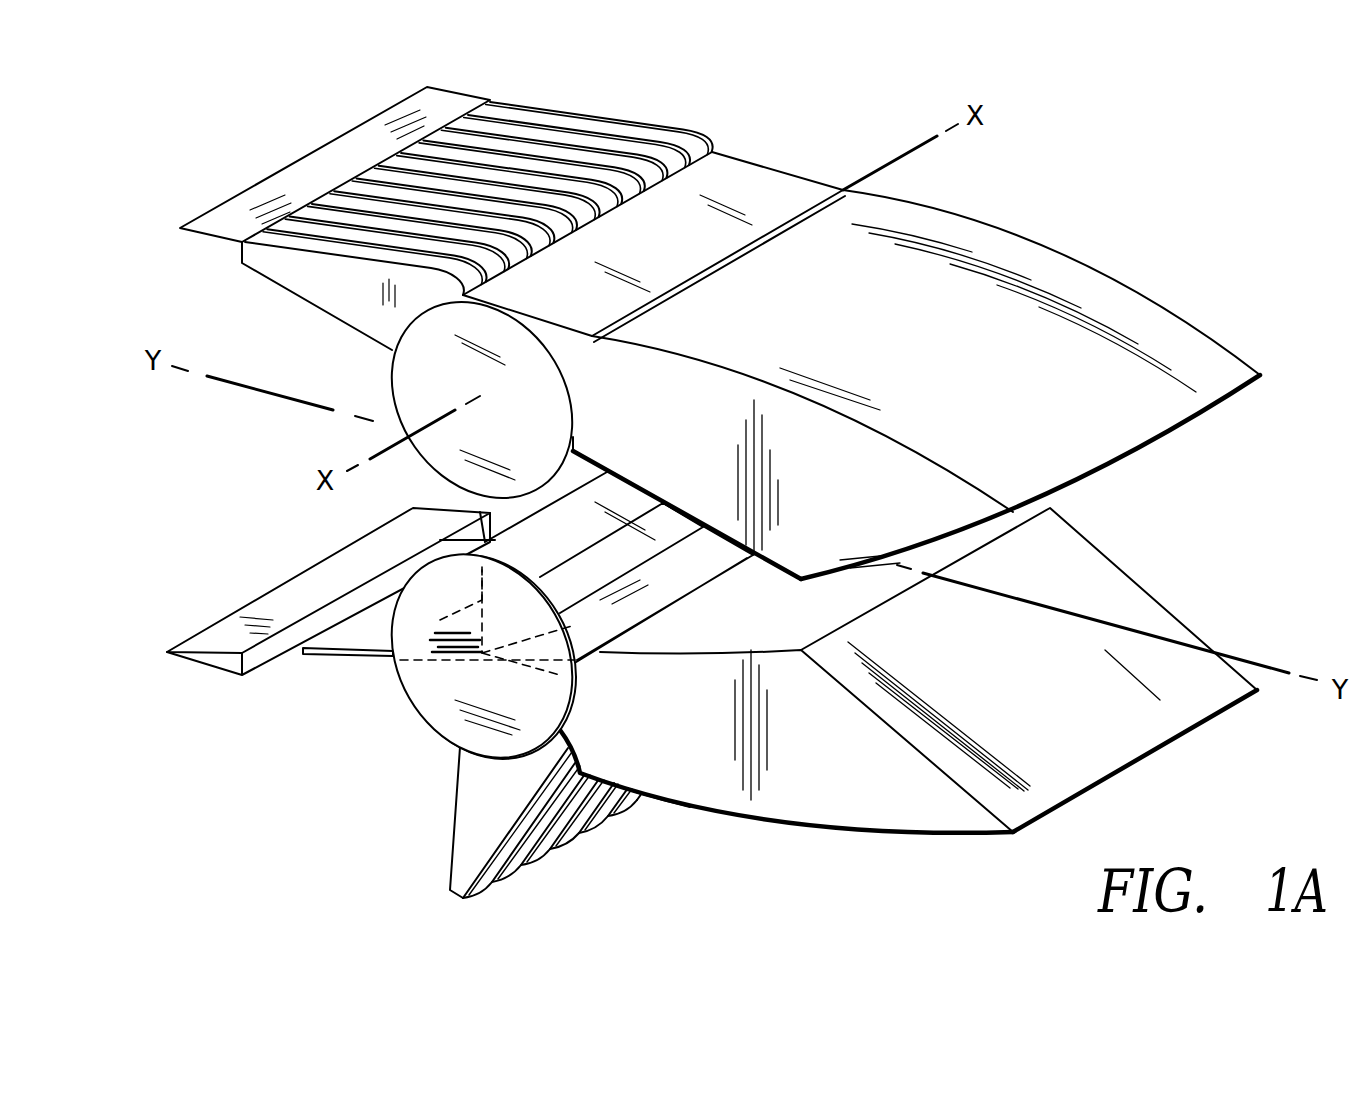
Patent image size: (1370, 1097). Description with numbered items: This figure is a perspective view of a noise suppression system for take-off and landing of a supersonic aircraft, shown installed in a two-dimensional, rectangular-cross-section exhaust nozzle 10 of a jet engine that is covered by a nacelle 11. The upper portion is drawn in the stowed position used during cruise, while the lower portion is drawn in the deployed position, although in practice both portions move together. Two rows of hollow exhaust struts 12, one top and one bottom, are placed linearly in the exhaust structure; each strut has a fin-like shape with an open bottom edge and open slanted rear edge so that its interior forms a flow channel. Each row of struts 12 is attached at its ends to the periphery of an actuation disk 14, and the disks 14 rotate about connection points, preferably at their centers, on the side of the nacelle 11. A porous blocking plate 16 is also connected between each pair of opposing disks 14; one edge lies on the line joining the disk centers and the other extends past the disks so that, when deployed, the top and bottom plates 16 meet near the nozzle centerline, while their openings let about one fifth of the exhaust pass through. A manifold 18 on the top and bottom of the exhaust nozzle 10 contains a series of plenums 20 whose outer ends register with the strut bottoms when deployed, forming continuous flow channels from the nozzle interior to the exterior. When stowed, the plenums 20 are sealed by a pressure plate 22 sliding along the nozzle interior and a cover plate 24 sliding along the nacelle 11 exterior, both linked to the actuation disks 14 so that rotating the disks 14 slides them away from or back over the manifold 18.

The exhaust nozzle 10 is at (964, 547).
The nacelle 11 is at (1033, 250).
The exhaust struts 12 is at (606, 116).
The actuation disk 14 is at (558, 362).
The porous blocking plate 16 is at (590, 453).
The manifold 18 is at (440, 637).
The plenums 20 is at (700, 150).
The pressure plate 22 is at (390, 349).
The cover plate 24 is at (780, 178).